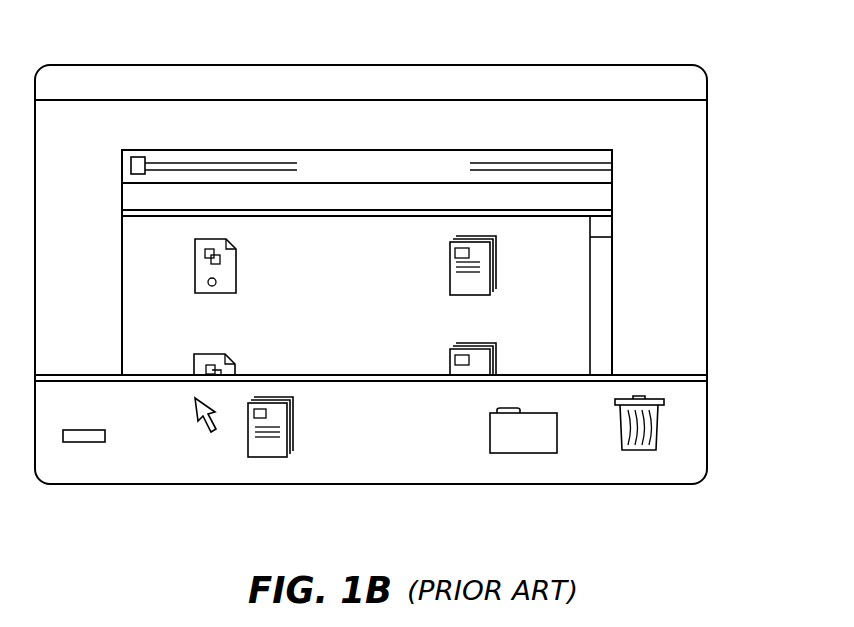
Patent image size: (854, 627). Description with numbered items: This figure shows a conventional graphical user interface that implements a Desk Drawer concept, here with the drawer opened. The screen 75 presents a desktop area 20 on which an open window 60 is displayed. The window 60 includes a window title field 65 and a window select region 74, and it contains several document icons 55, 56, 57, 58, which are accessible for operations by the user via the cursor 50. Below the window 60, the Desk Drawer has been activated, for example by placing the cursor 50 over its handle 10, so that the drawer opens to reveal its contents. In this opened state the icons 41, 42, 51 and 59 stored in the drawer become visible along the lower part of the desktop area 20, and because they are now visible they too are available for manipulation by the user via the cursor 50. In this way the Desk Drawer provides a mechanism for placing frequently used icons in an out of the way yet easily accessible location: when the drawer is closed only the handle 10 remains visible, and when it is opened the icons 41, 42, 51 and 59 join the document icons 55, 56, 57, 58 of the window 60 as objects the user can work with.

The handle 10 is at (414, 376).
The desktop area 20 is at (644, 120).
The icon 41 is at (92, 430).
The icon 42 is at (490, 428).
The cursor 50 is at (204, 430).
The icon 51 is at (284, 418).
The document icon 55 is at (483, 257).
The document icon 56 is at (228, 264).
The document icon 57 is at (233, 369).
The document icon 58 is at (483, 366).
The icon 59 is at (618, 424).
The open window 60 is at (487, 150).
The window title field 65 is at (337, 155).
The window select region 74 is at (131, 166).
The screen 75 is at (478, 65).